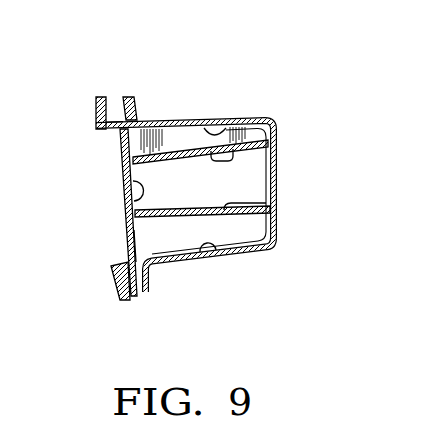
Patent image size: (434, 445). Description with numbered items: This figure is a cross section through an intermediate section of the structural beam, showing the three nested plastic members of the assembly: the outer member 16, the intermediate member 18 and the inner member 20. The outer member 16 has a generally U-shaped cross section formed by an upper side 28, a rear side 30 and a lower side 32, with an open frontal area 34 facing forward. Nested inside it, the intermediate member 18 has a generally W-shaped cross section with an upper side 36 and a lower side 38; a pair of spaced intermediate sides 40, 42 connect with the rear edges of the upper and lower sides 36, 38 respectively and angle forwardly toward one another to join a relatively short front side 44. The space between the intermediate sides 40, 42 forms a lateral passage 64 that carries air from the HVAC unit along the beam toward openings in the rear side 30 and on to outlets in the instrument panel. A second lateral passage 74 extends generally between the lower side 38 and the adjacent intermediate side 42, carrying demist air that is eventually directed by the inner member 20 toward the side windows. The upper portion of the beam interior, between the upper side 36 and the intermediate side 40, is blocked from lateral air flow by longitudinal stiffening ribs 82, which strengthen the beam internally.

The outer member 16 is at (136, 88).
The intermediate member 18 is at (100, 89).
The inner member 20 is at (107, 298).
The upper side 28 is at (204, 117).
The rear side 30 is at (278, 168).
The lower side 32 is at (227, 262).
The open frontal area 34 is at (112, 119).
The upper side 36 is at (234, 119).
The lower side 38 is at (205, 249).
The intermediate side 40 is at (214, 158).
The intermediate side 42 is at (234, 203).
The front side 44 is at (142, 203).
The lateral passage 64 is at (143, 177).
The lateral passage 74 is at (142, 239).
The longitudinal stiffening rib 82 is at (183, 140).